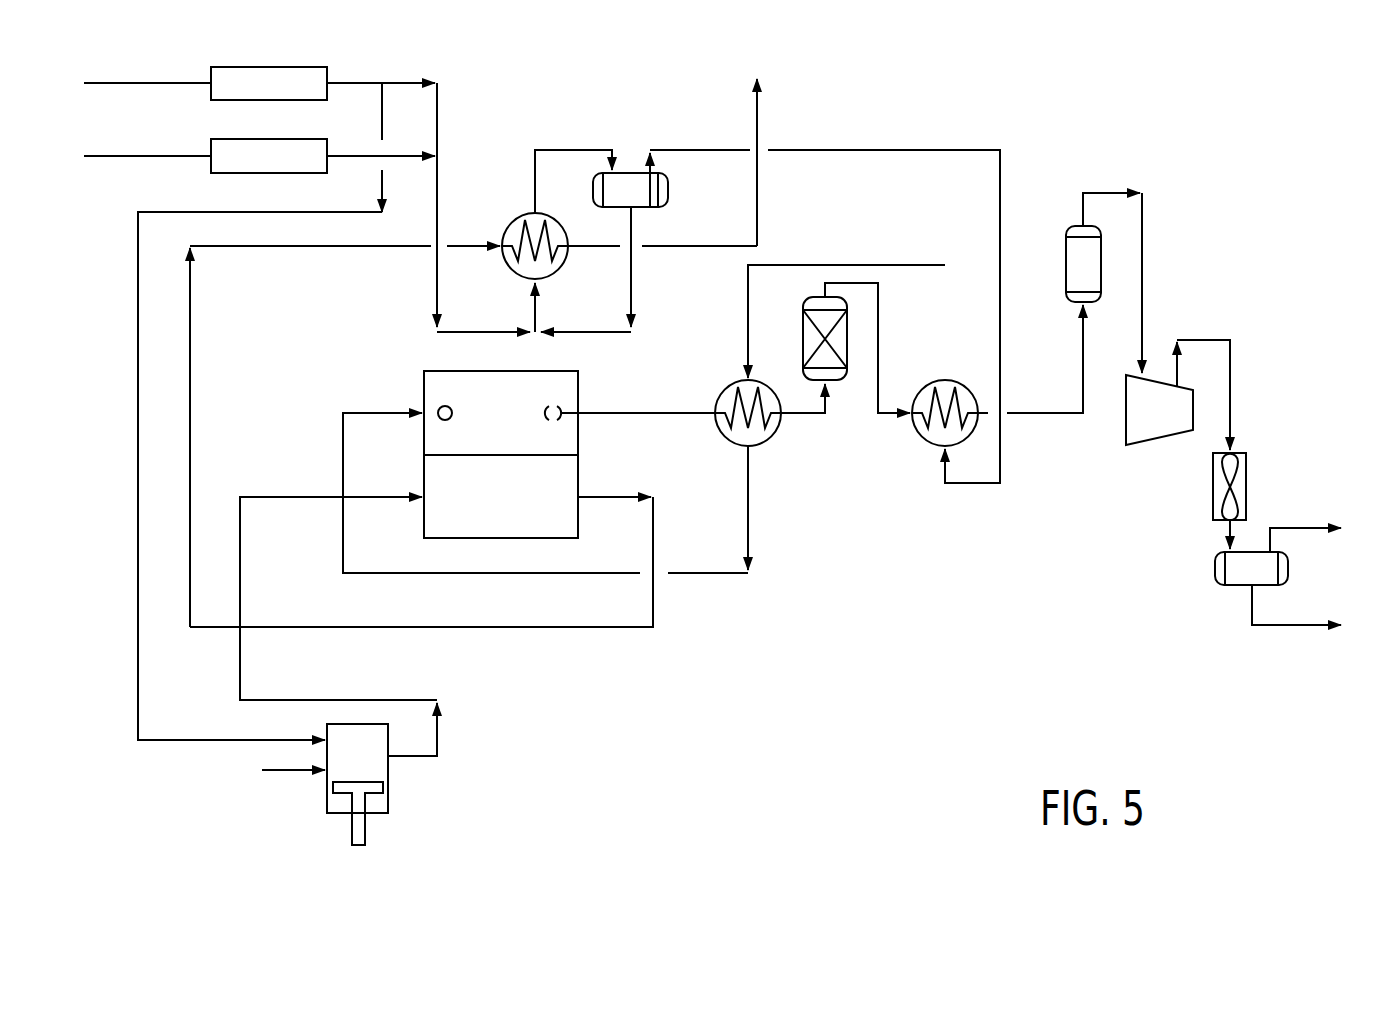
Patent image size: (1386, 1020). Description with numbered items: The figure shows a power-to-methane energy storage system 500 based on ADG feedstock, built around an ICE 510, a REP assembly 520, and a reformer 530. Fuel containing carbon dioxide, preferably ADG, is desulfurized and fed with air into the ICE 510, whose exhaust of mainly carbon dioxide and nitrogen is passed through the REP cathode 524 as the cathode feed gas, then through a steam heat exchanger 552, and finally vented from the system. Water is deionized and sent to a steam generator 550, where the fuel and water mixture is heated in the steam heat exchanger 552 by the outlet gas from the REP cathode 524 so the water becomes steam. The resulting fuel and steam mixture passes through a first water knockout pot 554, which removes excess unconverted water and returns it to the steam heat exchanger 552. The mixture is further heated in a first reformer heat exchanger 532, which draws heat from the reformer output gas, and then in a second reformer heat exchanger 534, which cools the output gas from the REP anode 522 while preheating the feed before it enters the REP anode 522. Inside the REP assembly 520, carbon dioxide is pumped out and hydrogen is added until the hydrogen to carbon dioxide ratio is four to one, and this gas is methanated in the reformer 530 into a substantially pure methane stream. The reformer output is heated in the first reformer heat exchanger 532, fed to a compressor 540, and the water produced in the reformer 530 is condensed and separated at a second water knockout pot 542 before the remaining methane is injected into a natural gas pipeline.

The energy storage system 500 is at (1250, 230).
The ICE 510 is at (558, 785).
The REP assembly 520 is at (692, 609).
The REP anode 522 is at (442, 431).
The REP cathode 524 is at (575, 483).
The reformer 530 is at (833, 497).
The first reformer heat exchanger 532 is at (921, 388).
The second reformer heat exchanger 534 is at (720, 435).
The compressor 540 is at (1133, 447).
The second water knockout pot 542 is at (1237, 587).
The steam generator 550 is at (630, 127).
The steam heat exchanger 552 is at (513, 216).
The first water knockout pot 554 is at (650, 208).